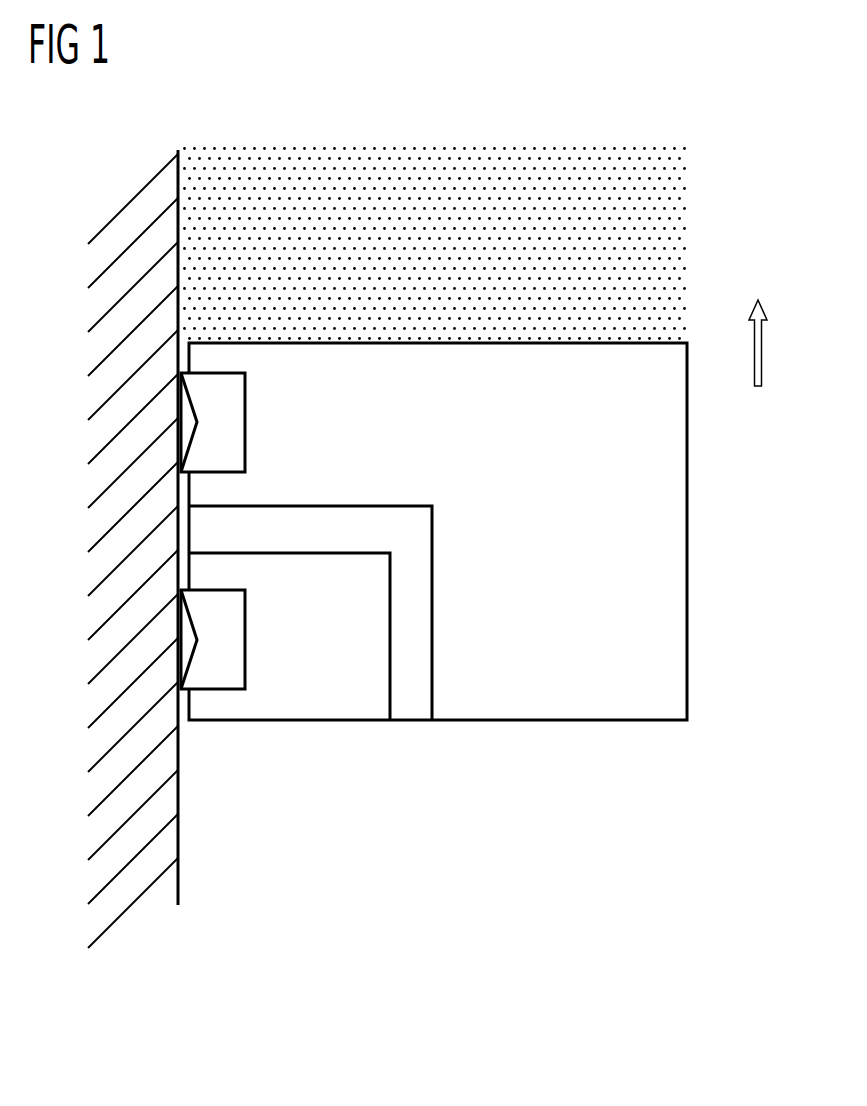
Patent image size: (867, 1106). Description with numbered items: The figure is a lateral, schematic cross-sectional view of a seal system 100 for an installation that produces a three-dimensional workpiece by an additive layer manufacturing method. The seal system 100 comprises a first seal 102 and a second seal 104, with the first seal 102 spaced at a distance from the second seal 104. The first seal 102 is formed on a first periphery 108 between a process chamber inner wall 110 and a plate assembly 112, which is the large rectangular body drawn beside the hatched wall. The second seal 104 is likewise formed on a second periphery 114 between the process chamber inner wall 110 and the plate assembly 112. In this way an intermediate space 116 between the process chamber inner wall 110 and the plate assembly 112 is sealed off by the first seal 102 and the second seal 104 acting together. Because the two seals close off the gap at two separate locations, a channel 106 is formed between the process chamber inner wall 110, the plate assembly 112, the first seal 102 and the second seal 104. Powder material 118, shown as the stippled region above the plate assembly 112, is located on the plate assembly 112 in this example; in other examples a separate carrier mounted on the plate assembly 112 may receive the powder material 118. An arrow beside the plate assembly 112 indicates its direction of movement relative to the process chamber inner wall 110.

The seal system 100 is at (397, 521).
The first seal 102 is at (210, 392).
The second seal 104 is at (213, 677).
The channel 106 is at (187, 533).
The first periphery 108 is at (188, 428).
The process chamber inner wall 110 is at (139, 194).
The plate assembly 112 is at (700, 345).
The second periphery 114 is at (190, 640).
The intermediate space 116 is at (187, 502).
The powder material 118 is at (438, 167).